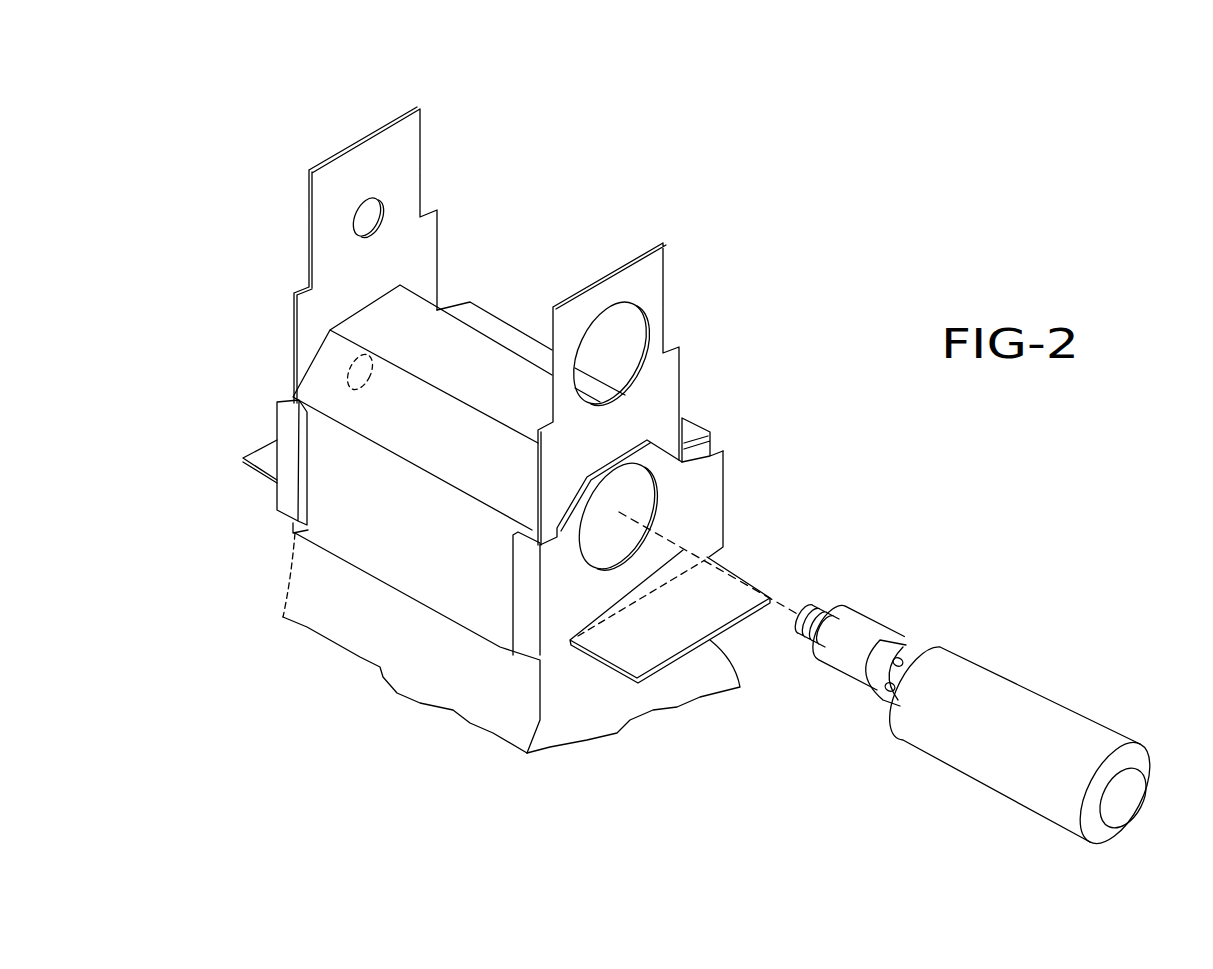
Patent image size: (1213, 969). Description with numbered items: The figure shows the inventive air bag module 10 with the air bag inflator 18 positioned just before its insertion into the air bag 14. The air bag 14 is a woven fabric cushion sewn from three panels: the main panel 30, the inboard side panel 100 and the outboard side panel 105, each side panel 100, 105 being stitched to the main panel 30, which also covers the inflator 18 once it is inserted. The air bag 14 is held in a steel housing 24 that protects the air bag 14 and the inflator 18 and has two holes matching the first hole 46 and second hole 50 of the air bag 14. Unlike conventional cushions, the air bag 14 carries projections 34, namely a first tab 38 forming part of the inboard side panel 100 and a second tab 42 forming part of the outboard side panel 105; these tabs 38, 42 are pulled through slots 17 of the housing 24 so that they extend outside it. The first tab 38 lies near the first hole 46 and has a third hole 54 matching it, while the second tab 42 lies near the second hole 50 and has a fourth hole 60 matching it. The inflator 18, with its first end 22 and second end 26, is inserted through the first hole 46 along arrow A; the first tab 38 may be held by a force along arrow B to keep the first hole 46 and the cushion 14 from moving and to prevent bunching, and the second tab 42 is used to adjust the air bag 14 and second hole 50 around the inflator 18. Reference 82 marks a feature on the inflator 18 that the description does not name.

The air bag module 10 is at (199, 306).
The air bag 14 is at (750, 342).
The slots 17 is at (292, 401).
The air bag inflator 18 is at (1052, 683).
The first end 22 is at (1128, 790).
The housing 24 is at (406, 432).
The second end 26 is at (828, 650).
The main panel 30 is at (409, 674).
The projections 34 is at (318, 150).
The first tab 38 is at (634, 259).
The second tab 42 is at (309, 215).
The first hole 46 is at (636, 522).
The second hole 50 is at (348, 372).
The third hole 54 is at (642, 367).
The fourth hole 60 is at (379, 206).
The set screws 82 is at (897, 659).
The side panel 100 is at (562, 709).
The side panel 105 is at (288, 572).